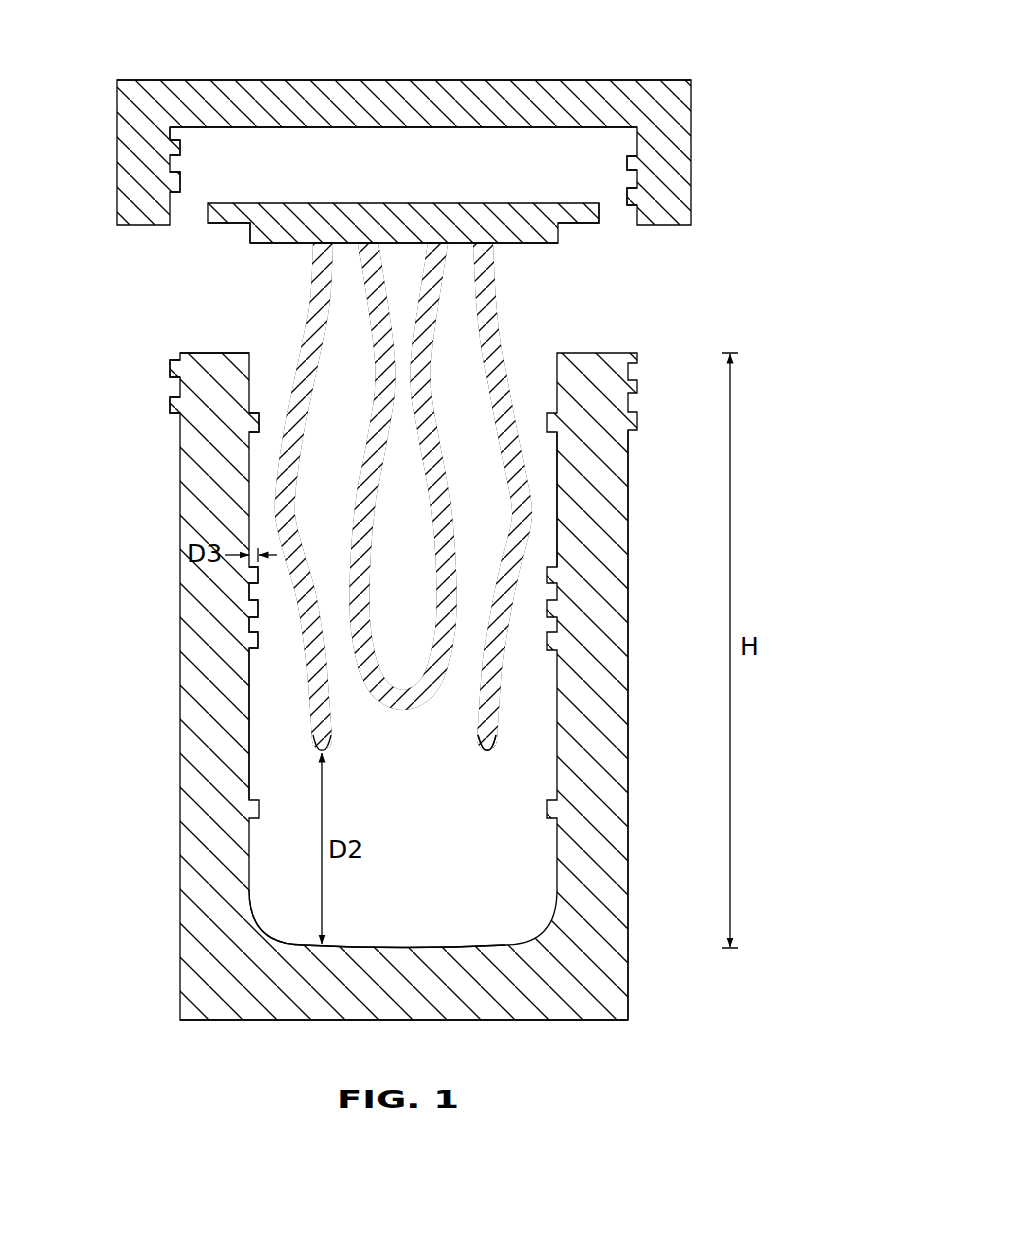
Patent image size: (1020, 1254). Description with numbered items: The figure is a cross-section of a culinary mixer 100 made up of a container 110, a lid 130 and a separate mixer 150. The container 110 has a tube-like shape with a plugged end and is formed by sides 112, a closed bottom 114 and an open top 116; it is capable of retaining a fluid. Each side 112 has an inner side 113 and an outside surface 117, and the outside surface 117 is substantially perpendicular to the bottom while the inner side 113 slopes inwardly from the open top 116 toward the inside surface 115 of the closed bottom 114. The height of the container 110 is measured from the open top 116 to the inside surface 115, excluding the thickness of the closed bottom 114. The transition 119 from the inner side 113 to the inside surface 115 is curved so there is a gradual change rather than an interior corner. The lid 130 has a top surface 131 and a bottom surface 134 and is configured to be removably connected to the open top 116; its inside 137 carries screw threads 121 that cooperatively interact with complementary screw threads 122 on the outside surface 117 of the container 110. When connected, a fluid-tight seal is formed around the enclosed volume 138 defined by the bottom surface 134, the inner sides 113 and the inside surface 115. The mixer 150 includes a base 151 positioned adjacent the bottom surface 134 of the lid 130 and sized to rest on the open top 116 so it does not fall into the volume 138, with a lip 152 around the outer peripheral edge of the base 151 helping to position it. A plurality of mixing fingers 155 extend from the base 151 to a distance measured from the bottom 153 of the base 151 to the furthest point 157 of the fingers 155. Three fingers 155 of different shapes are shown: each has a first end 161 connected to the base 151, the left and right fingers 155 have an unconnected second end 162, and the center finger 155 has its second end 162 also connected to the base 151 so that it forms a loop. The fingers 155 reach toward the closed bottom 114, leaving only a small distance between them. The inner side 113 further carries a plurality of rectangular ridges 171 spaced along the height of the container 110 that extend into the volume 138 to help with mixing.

The culinary mixer 100 is at (728, 64).
The container 110 is at (607, 890).
The sides 112 is at (612, 645).
The inner side 113 is at (252, 735).
The closed bottom 114 is at (253, 1020).
The inside surface 115 is at (457, 946).
The open top 116 is at (205, 352).
The outside surface 117 is at (632, 531).
The transition 119 is at (267, 911).
The screw threads 121 is at (177, 186).
The complementary screw threads 122 is at (172, 405).
The lid 130 is at (472, 95).
The top surface 131 is at (330, 79).
The bottom surface 134 is at (461, 129).
The inside 137 is at (170, 133).
The enclosed volume 138 is at (519, 832).
The mixer 150 is at (194, 253).
The base 151 is at (588, 224).
The lip 152 is at (225, 242).
The bottom 153 is at (277, 243).
The mixing fingers 155 is at (295, 387).
The furthest point 157 is at (471, 757).
The first end 161 is at (335, 243).
The second end 162 is at (447, 260).
The ridges 171 is at (262, 422).